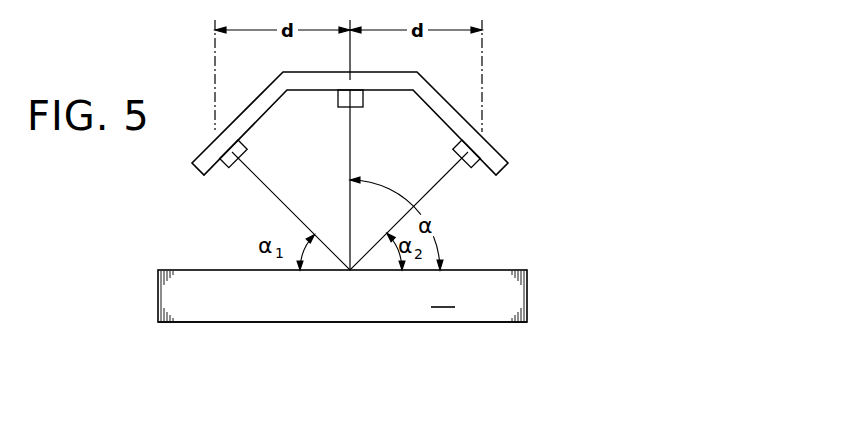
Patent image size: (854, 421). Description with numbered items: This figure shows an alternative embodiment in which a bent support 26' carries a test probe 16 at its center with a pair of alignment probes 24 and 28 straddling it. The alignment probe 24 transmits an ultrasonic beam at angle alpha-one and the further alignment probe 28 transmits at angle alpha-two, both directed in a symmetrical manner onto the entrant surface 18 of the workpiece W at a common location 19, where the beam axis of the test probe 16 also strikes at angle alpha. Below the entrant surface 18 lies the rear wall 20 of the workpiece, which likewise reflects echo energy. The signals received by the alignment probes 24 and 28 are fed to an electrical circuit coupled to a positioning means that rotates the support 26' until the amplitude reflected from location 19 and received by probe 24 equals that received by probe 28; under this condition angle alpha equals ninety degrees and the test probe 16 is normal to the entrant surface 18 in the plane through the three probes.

The test probe 16 is at (355, 100).
The entrant surface 18 is at (498, 270).
The location 19 is at (350, 271).
The rear wall 20 is at (472, 322).
The alignment probe 24 is at (245, 148).
The support 26' is at (358, 118).
The alignment probe 28 is at (468, 158).